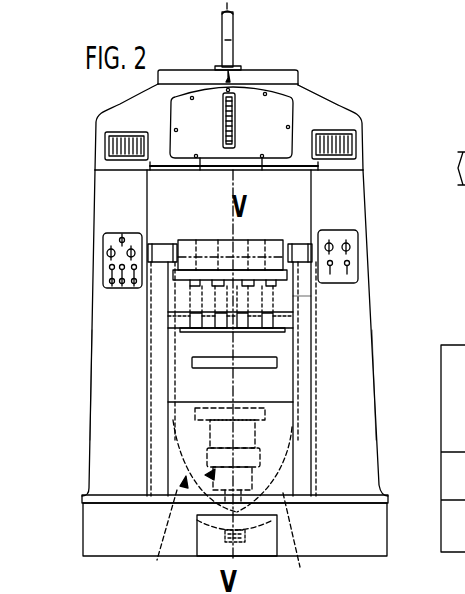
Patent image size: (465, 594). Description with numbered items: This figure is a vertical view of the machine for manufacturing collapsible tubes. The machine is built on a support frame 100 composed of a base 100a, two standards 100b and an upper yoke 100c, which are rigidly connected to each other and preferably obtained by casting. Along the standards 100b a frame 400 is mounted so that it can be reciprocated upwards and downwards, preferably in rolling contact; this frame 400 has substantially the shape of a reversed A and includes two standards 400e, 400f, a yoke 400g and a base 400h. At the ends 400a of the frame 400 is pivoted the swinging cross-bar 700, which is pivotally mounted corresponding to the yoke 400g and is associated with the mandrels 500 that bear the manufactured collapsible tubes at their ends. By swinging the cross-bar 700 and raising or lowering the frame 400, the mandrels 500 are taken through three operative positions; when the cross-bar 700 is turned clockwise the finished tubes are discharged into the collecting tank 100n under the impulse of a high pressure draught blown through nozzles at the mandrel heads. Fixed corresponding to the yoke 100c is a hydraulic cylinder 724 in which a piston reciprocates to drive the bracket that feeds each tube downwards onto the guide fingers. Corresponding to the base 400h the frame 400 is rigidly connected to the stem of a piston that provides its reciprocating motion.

The support frame 100 is at (126, 482).
The base 100a is at (362, 535).
The standards 100b is at (100, 378).
The yoke 100c is at (313, 110).
The collecting tank 100n is at (262, 593).
The cylinder 724 is at (236, 30).
The swinging cross-bar 700 is at (258, 252).
The frame 400 is at (159, 558).
The ends of the frame 400a is at (162, 245).
The standard 400e is at (170, 430).
The standard 400f is at (300, 425).
The yoke 400g is at (300, 297).
The base 400h is at (299, 555).
The mandrels 500 is at (197, 332).